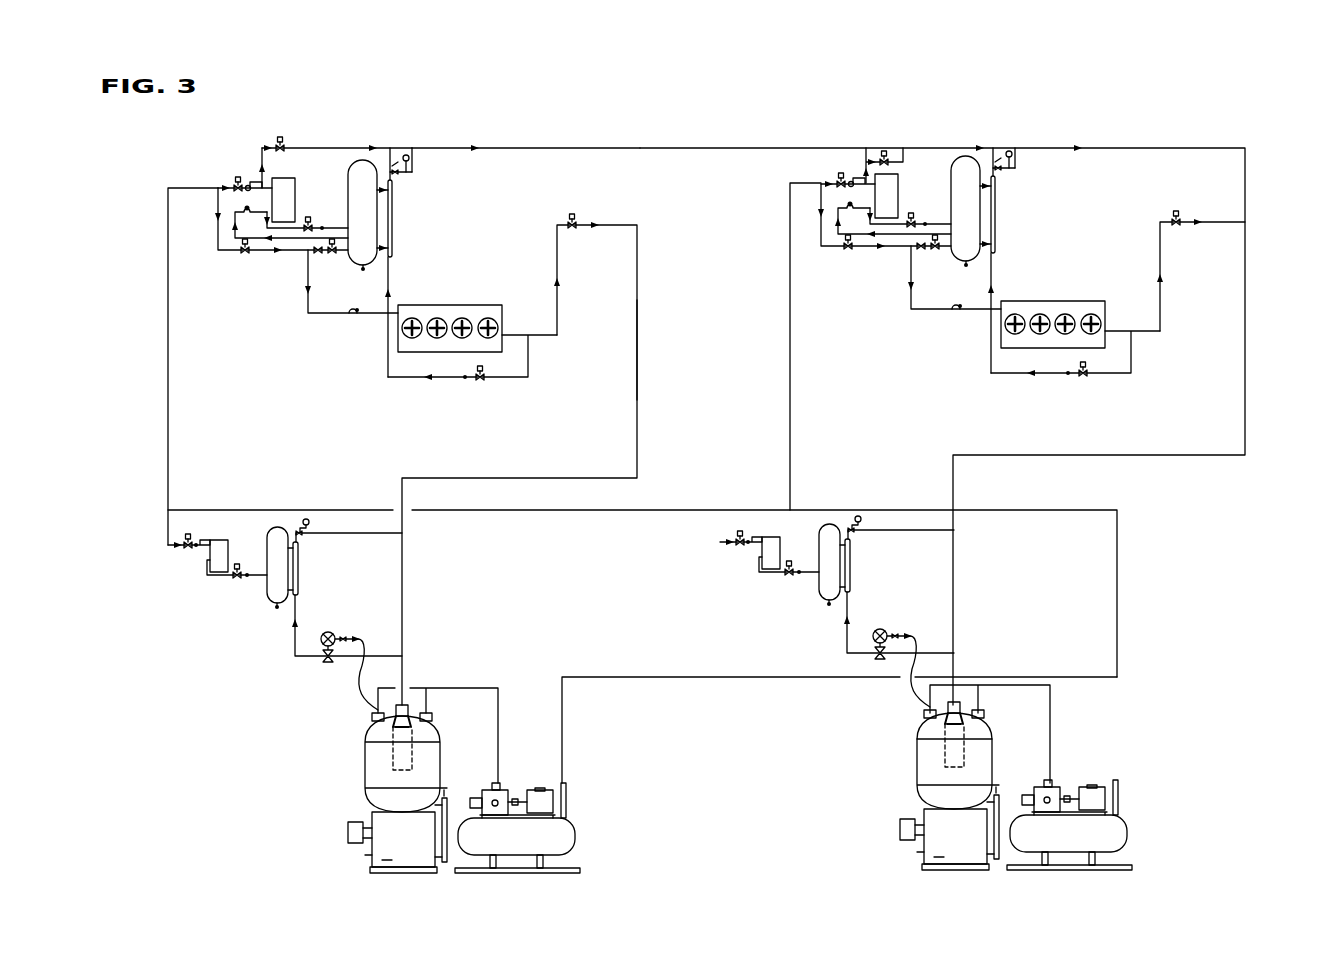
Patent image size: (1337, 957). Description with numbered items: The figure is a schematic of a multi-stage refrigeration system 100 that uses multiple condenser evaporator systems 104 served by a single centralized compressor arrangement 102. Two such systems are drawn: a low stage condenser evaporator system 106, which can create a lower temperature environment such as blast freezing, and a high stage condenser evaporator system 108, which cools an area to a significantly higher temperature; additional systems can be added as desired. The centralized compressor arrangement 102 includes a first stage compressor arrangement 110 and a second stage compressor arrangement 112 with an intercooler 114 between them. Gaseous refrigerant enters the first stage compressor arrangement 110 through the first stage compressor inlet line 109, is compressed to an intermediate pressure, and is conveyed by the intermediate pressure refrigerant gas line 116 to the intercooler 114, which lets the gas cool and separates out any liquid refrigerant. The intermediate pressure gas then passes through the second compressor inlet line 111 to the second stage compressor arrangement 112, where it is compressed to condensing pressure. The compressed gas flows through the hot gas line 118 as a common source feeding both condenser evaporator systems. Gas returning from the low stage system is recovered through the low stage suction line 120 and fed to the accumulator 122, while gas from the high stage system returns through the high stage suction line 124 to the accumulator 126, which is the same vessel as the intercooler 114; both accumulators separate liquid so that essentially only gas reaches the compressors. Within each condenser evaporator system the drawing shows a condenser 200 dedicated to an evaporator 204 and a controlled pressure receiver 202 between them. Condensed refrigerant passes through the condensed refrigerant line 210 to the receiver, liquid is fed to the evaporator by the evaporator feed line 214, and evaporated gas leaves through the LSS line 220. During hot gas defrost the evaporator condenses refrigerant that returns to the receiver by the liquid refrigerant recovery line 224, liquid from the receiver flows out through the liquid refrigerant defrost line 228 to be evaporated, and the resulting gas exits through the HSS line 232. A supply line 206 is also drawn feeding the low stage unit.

The refrigeration system 100 is at (775, 126).
The centralized compressor arrangement 102 is at (283, 803).
The condenser evaporator systems 104 is at (584, 124).
The low stage condenser evaporator system 106 is at (351, 326).
The high stage condenser evaporator system 108 is at (1263, 117).
The first stage compressor inlet line 109 is at (465, 688).
The first stage compressor arrangement 110 is at (575, 843).
The second compressor inlet line 111 is at (1030, 685).
The second stage compressor arrangement 112 is at (1135, 818).
The intercooler 114 is at (912, 786).
The intermediate pressure refrigerant gas line 116 is at (618, 677).
The hot gas line 118 is at (1117, 575).
The low stage suction line 120 is at (637, 358).
The accumulator 122 is at (365, 732).
The high stage suction line 124 is at (662, 147).
The accumulator 126 is at (917, 733).
The condenser 200 is at (296, 181).
The controlled pressure receiver 202 is at (354, 160).
The evaporator 204 is at (450, 303).
The supply line 206 is at (168, 290).
The condensed refrigerant line 210 is at (335, 228).
The evaporator feed line 214 is at (309, 301).
The LSS line 220 is at (560, 303).
The liquid refrigerant recovery line 224 is at (527, 358).
The liquid refrigerant defrost line 228 is at (290, 251).
The HSS line 232 is at (510, 150).